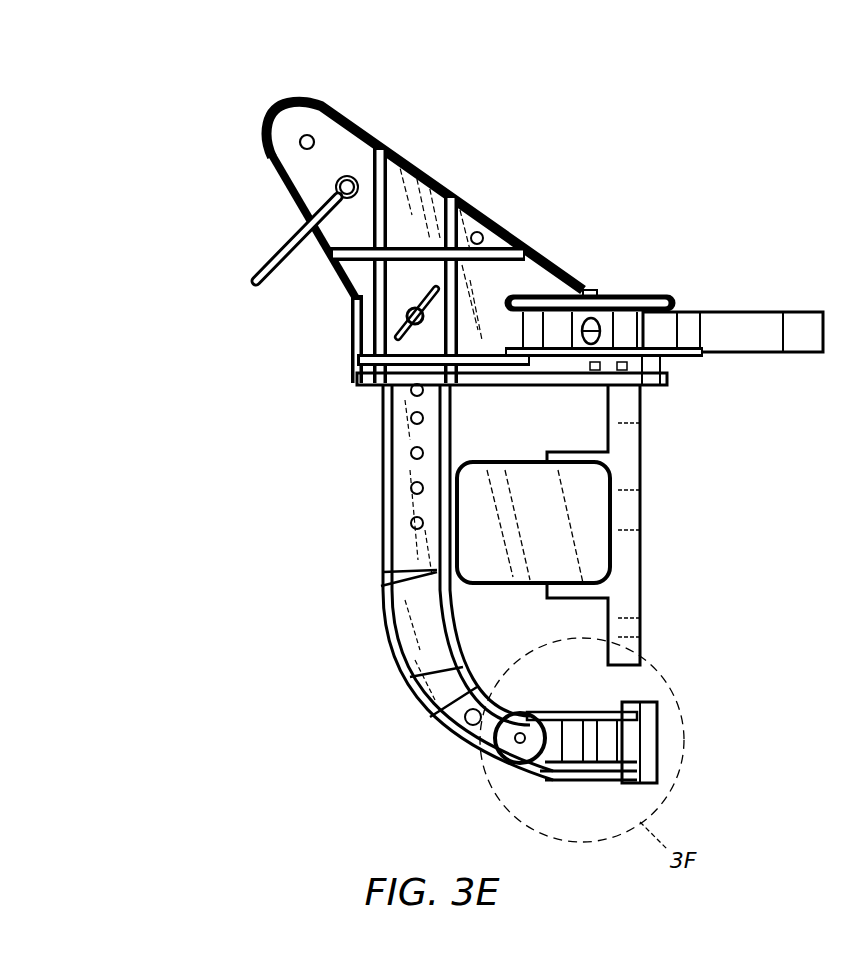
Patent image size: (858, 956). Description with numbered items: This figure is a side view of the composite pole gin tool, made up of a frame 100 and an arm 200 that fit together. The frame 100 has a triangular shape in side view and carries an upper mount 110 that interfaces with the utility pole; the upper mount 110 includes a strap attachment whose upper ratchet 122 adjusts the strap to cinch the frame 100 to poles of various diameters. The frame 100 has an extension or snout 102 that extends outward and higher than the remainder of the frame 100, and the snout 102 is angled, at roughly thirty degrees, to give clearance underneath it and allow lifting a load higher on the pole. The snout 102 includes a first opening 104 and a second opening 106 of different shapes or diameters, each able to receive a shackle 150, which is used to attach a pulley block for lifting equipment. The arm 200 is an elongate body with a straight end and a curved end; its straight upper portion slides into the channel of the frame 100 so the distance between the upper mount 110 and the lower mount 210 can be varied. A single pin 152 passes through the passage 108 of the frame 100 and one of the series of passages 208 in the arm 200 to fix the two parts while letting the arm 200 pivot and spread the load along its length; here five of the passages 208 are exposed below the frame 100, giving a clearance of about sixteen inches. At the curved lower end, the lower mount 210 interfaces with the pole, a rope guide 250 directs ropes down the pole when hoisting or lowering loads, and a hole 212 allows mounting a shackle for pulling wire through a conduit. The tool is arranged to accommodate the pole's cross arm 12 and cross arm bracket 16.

The frame 100 is at (467, 207).
The snout 102 is at (320, 96).
The first opening 104 is at (336, 184).
The second opening 106 is at (299, 143).
The passage 108 is at (353, 303).
The upper mount 110 is at (548, 297).
The upper ratchet 122 is at (625, 332).
The cross arm 12 is at (590, 510).
The cross arm bracket 16 is at (625, 603).
The shackle 150 is at (255, 279).
The pin 152 is at (360, 338).
The arm 200 is at (380, 632).
The series of passages 208 is at (405, 455).
The lower mount 210 is at (658, 742).
The hole 212 is at (450, 743).
The rope guide 250 is at (510, 745).